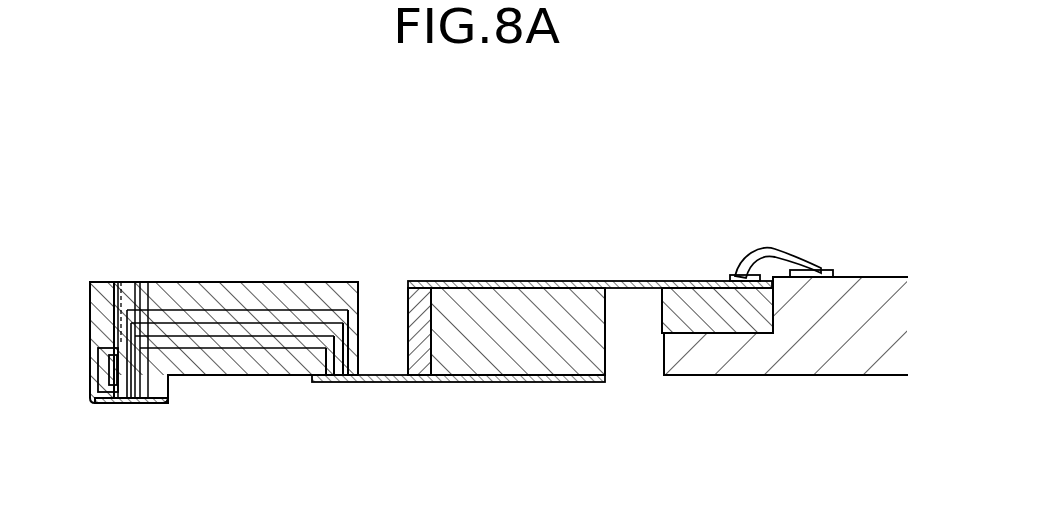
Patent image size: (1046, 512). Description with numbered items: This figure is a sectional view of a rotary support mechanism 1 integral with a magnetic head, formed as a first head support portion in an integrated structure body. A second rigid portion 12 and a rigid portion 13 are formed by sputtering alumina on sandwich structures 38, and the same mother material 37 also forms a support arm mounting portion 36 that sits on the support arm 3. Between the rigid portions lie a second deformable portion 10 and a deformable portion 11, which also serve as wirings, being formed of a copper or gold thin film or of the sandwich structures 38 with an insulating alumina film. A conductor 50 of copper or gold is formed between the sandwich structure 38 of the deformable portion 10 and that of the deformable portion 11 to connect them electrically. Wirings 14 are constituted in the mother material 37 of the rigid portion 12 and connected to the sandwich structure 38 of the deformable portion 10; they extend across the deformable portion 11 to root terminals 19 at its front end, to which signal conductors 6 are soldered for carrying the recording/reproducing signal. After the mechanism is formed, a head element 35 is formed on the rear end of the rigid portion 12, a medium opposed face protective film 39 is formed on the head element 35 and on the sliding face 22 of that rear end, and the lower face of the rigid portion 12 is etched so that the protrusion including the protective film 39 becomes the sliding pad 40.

The rotary support mechanism 1 is at (765, 193).
The head element 35 is at (148, 277).
The wirings 14 is at (250, 346).
The rigid portion 12 is at (315, 295).
The conductor 50 is at (404, 293).
The rigid portion 13 is at (525, 300).
The deformable portion 11 is at (650, 281).
The root terminals 19 is at (728, 275).
The signal conductors 6 is at (865, 277).
The sliding pad 40 is at (85, 363).
The sliding face 22 is at (165, 404).
The mother material 37 is at (287, 370).
The deformable portion 10 is at (388, 382).
The sandwich structures 38 is at (632, 432).
The support arm mounting portion 36 is at (727, 317).
The support arm 3 is at (832, 347).
The medium opposed face protective film 39 is at (120, 405).